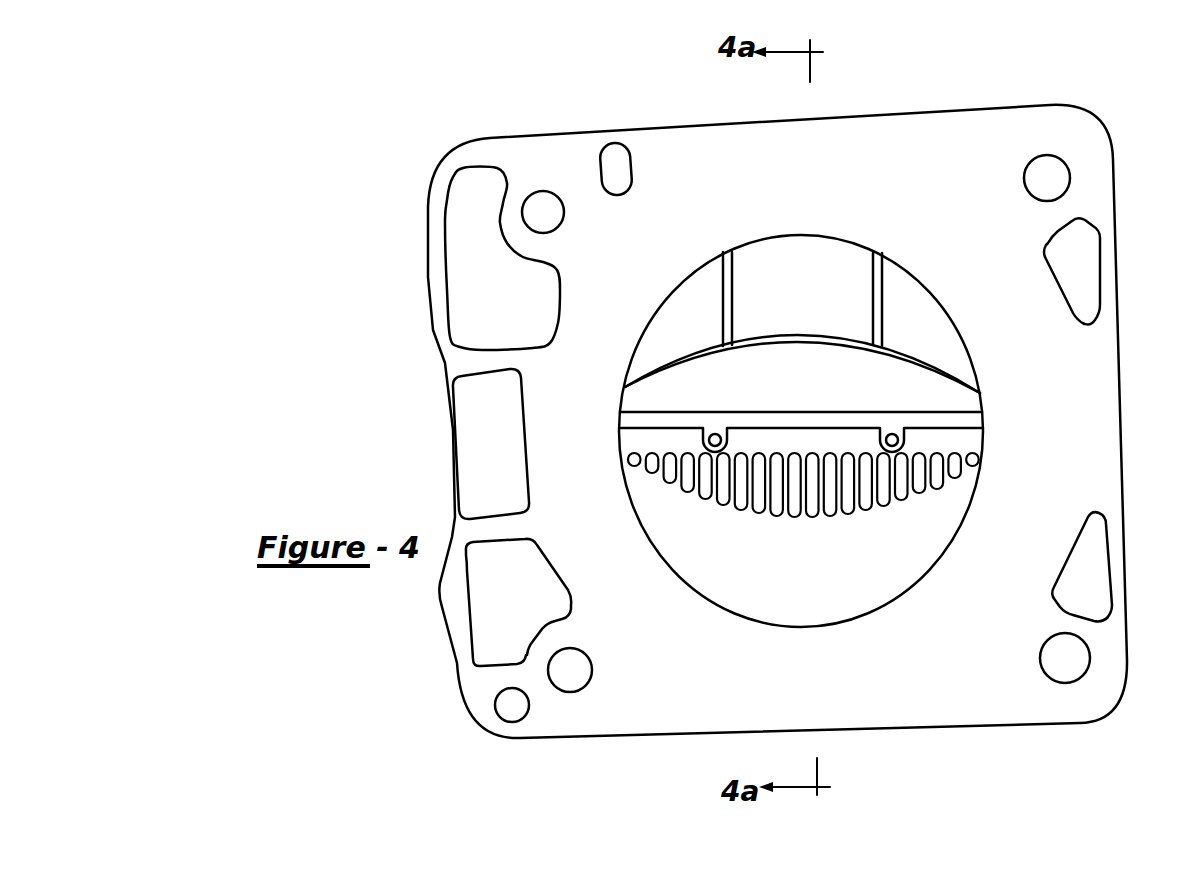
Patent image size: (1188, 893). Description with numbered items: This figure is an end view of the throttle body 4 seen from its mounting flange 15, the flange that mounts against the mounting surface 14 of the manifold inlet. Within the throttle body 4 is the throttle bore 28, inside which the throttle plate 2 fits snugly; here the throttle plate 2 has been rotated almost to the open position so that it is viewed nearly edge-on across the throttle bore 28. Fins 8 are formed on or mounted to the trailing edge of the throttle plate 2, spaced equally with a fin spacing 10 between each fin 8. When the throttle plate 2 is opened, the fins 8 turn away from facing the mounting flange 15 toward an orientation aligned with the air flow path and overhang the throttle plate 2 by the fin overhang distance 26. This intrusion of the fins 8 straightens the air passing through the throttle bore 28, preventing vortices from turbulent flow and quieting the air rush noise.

The throttle plate 2 is at (803, 333).
The throttle body 4 is at (913, 140).
The fins 8 is at (785, 515).
The fin spacing 10 is at (810, 488).
The mounting surface 14 is at (642, 196).
The mounting flange 15 is at (1122, 413).
The fin overhang distance 26 is at (858, 502).
The throttle bore 28 is at (853, 203).